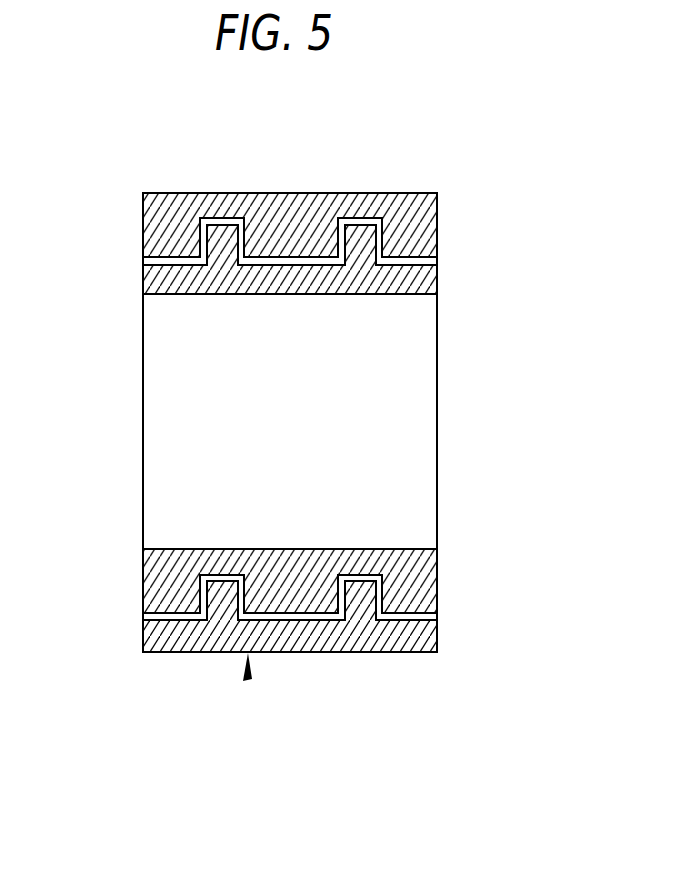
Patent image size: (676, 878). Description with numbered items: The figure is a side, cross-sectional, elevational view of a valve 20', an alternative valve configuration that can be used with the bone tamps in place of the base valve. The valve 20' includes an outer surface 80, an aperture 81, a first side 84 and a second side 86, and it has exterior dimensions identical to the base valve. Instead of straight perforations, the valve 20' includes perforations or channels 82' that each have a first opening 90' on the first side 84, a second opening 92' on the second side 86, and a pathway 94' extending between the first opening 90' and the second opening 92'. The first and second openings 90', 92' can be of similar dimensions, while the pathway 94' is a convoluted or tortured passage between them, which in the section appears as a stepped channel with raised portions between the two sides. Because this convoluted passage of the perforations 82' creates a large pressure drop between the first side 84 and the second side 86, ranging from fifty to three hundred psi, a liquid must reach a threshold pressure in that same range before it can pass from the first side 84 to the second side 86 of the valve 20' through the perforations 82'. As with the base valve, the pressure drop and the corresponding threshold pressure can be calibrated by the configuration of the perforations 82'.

The valve 20' is at (217, 708).
The outer surface 80 is at (308, 661).
The aperture 81 is at (272, 550).
The perforations 82' is at (403, 676).
The first side 84 is at (143, 402).
The second side 86 is at (437, 440).
The first opening 90' is at (254, 590).
The second opening 92' is at (477, 613).
The pathway 94' is at (157, 668).